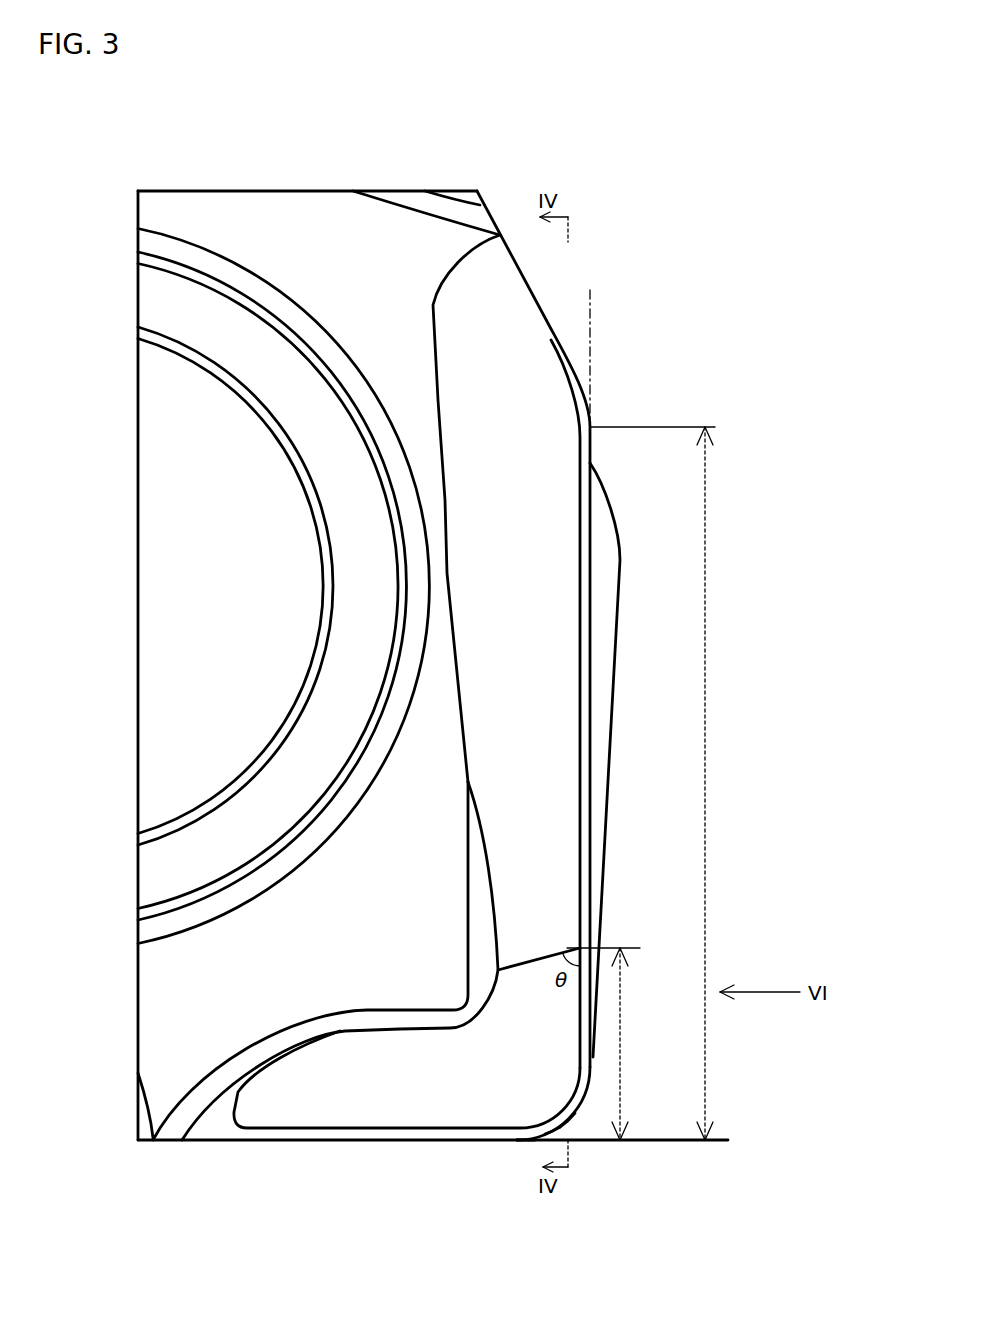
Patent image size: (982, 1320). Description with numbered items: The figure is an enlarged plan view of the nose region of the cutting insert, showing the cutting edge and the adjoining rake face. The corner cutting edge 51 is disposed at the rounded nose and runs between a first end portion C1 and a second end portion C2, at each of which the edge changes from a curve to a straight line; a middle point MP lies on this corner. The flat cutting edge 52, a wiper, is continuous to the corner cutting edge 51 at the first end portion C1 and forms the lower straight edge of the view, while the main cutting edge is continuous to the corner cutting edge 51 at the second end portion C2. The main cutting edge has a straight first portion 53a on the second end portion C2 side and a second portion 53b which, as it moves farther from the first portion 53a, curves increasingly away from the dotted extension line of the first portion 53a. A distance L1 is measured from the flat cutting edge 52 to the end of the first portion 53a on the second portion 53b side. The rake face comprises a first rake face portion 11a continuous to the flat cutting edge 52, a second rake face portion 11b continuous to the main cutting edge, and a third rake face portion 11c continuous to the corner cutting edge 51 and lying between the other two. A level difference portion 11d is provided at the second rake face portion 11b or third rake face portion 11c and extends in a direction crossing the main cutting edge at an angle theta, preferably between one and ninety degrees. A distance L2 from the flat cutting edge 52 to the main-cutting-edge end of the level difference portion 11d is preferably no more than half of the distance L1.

The first rake face portion 11a is at (333, 1113).
The second rake face portion 11b is at (513, 335).
The third rake face portion 11c is at (508, 1053).
The level difference portion 11d is at (538, 956).
The corner cutting edge 51 is at (585, 1097).
The flat cutting edge 52 is at (300, 1141).
The first portion 53a is at (591, 617).
The second portion 53b is at (577, 363).
The first end portion C1 is at (516, 1141).
The second end portion C2 is at (587, 1060).
The middle point MP is at (568, 1106).
The distance L1 is at (668, 783).
The distance L2 is at (634, 1044).